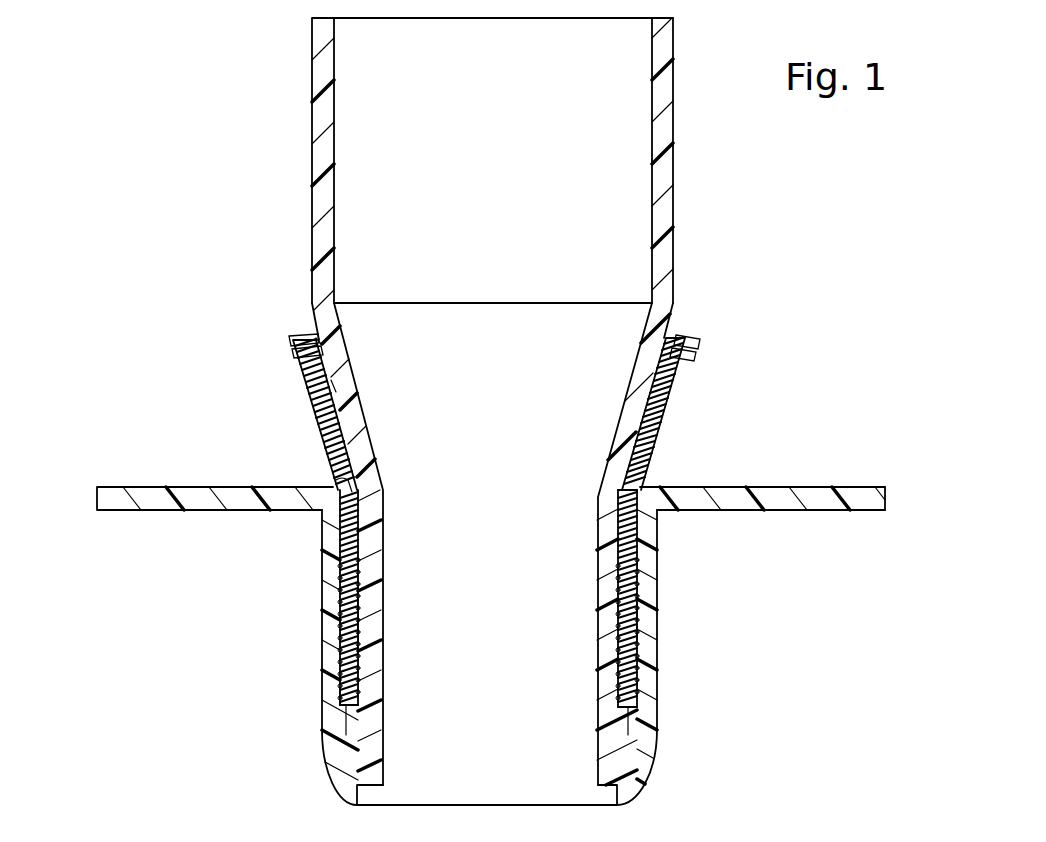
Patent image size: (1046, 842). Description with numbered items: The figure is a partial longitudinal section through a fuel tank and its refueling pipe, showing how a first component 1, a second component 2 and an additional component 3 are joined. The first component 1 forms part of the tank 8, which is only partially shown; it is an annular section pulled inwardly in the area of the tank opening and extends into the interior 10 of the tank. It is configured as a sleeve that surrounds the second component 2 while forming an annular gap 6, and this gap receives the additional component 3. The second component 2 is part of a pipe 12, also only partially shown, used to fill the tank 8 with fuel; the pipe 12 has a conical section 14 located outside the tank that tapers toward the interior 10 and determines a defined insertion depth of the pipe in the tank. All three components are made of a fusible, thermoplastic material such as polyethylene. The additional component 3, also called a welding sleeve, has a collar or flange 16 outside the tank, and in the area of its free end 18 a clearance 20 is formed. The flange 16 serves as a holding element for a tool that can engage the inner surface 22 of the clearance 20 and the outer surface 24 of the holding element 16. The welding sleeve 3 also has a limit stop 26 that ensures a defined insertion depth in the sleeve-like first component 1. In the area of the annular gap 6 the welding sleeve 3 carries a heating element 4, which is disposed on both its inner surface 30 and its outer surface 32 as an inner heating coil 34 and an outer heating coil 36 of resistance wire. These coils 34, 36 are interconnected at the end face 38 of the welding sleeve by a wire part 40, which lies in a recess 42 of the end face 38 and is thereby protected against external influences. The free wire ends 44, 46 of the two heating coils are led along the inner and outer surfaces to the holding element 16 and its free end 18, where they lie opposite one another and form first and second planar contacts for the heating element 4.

The first component 1 is at (335, 586).
The second component 2 is at (372, 588).
The additional component 3 is at (338, 647).
The heating element 4 is at (357, 625).
The annular gap 6 is at (350, 718).
The tank 8 is at (190, 497).
The interior 10 is at (167, 626).
The pipe 12 is at (312, 150).
The conical section 14 is at (358, 432).
The flange 16 is at (330, 447).
The free end 18 is at (300, 340).
The clearance 20 is at (312, 328).
The inner surface 22 is at (333, 385).
The outer surface 24 is at (315, 403).
The limit stop 26 is at (640, 490).
The inner surface 30 is at (640, 565).
The outer surface 32 is at (615, 538).
The inner heating coil 34 is at (640, 635).
The outer heating coil 36 is at (615, 605).
The end face 38 is at (343, 712).
The wire part 40 is at (338, 698).
The recess 42 is at (643, 723).
The free wire end 44 is at (680, 340).
The free wire end 46 is at (683, 365).